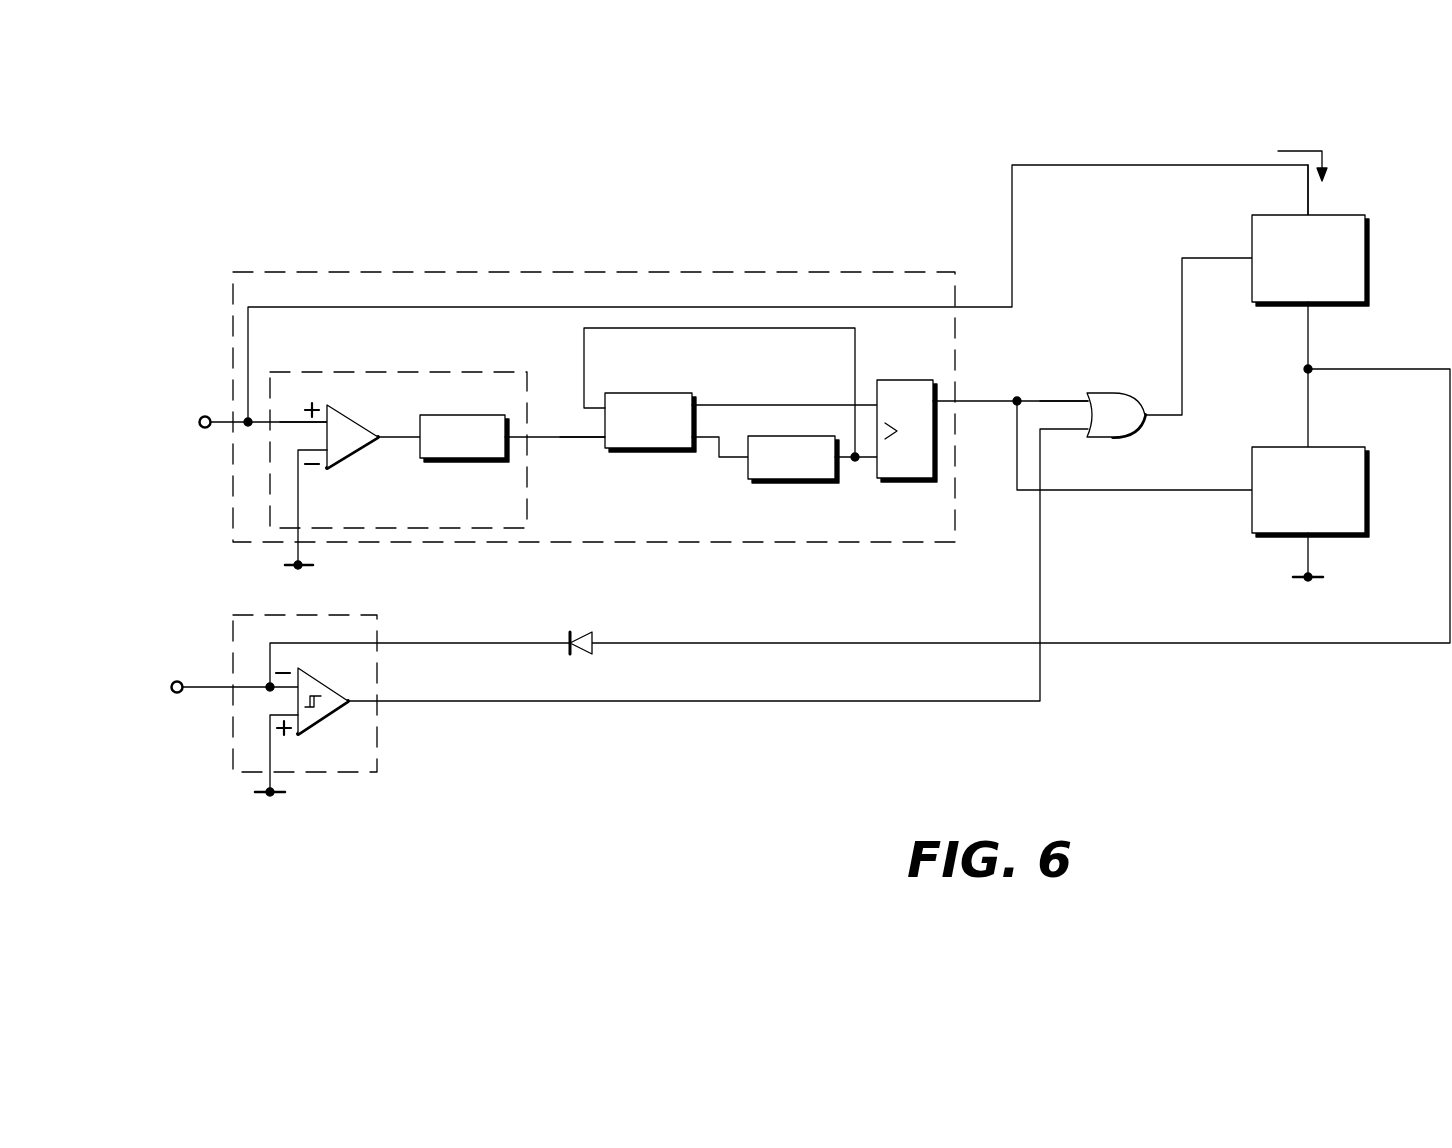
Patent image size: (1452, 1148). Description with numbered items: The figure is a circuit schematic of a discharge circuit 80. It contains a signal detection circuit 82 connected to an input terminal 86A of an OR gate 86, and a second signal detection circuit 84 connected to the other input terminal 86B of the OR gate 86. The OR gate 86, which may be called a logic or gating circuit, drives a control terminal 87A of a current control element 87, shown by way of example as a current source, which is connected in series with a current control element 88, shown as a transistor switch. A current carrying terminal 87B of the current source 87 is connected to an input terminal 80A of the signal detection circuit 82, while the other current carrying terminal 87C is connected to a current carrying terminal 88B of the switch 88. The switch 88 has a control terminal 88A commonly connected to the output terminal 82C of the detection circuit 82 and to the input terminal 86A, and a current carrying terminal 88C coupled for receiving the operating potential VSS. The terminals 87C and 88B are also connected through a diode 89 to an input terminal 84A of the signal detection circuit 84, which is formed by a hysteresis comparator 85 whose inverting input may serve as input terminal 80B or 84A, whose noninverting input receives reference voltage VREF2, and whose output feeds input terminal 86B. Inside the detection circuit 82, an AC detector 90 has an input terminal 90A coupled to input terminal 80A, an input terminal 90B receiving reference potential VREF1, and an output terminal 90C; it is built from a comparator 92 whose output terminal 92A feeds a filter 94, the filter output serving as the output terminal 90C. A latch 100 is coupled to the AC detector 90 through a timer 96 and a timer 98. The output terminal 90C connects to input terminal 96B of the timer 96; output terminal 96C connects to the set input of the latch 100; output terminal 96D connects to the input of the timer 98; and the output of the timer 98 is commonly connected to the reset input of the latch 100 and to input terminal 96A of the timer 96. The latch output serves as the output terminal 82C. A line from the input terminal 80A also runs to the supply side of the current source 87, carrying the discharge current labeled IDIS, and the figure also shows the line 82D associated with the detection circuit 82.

The discharge circuit 80 is at (992, 788).
The input terminal 80A is at (205, 416).
The input terminal 80B is at (177, 680).
The signal detection circuit 82 is at (844, 272).
The output terminal 82C is at (966, 401).
The sense input line 82D is at (980, 307).
The signal detection circuit 84 is at (338, 773).
The input terminal 84A is at (392, 643).
The hysteresis comparator 85 is at (330, 714).
The OR gate 86 is at (1112, 441).
The input terminal 86A is at (1062, 395).
The input terminal 86B is at (1065, 430).
The current control element 87 is at (1369, 248).
The control terminal 87A is at (1247, 258).
The current carrying terminal 87B is at (1308, 210).
The current carrying terminal 87C is at (1308, 333).
The current control element 88 is at (1369, 488).
The control terminal 88A is at (1227, 489).
The current carrying terminal 88B is at (1309, 446).
The current carrying terminal 88C is at (1309, 558).
The diode 89 is at (572, 632).
The AC detector 90 is at (452, 372).
The input terminal 90A is at (291, 420).
The input terminal 90B is at (300, 505).
The output terminal 90C is at (534, 437).
The comparator 92 is at (357, 451).
The output terminal 92A is at (398, 432).
The filter 94 is at (465, 463).
The timer 96 is at (643, 393).
The input terminal 96A is at (586, 383).
The input terminal 96B is at (598, 438).
The output terminal 96C is at (706, 405).
The output terminal 96D is at (719, 458).
The timer 98 is at (794, 436).
The latch 100 is at (904, 380).